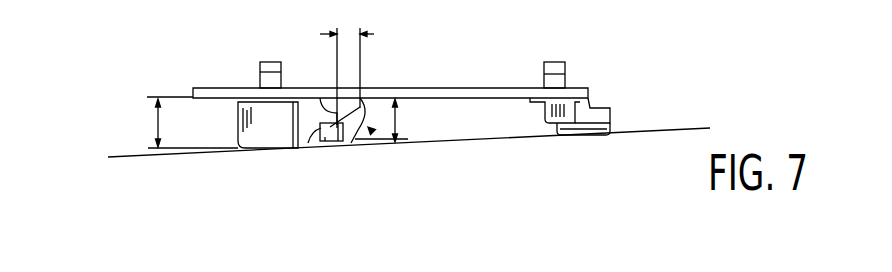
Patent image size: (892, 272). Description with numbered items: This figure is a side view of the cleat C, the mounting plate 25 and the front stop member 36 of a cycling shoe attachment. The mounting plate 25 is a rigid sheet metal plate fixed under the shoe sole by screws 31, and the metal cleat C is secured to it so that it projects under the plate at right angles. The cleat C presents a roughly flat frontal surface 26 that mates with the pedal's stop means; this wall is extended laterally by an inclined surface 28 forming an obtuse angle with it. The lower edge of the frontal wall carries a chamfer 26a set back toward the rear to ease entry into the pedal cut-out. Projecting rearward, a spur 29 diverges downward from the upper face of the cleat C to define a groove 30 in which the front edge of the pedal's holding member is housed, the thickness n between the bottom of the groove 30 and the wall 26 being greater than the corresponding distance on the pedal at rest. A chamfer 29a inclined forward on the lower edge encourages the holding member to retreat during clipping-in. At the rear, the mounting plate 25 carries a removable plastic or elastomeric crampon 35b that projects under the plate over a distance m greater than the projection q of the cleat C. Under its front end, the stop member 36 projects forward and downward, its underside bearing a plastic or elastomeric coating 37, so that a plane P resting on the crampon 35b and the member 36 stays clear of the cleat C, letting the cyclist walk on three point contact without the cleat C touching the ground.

The mounting plate 25 is at (470, 96).
The frontal surface 26 is at (375, 100).
The chamfer 26a is at (360, 133).
The inclined surface 28 is at (343, 142).
The spur 29 is at (318, 137).
The chamfer 29a is at (325, 137).
The groove 30 is at (321, 100).
The screws 31 is at (265, 70).
The crampon 35b is at (264, 135).
The stop member 36 is at (612, 107).
The coating 37 is at (588, 136).
The plane P is at (130, 158).
The cleat C is at (374, 132).
The distance m is at (186, 122).
The thickness n is at (347, 64).
The projection q is at (398, 121).